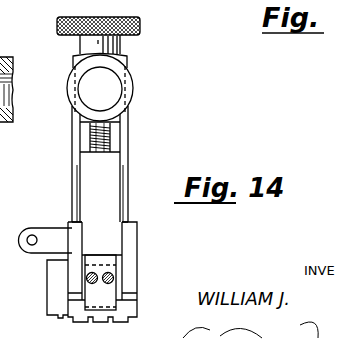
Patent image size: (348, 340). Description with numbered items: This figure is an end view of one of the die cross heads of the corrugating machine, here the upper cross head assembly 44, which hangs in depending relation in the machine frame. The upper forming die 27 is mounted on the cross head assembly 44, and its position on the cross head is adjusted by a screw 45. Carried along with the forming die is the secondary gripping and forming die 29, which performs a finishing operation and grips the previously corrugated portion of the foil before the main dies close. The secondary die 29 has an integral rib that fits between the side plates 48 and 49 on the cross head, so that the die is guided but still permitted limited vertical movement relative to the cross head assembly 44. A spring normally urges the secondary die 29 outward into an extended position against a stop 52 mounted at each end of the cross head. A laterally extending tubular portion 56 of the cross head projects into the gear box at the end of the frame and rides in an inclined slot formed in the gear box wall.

The screw 45 is at (142, 23).
The tubular portion 56 is at (135, 82).
The upper cross head assembly 44 is at (130, 142).
The side plate 48 is at (72, 223).
The side plate 49 is at (130, 238).
The stop 52 is at (111, 289).
The secondary gripping and forming die 29 is at (133, 299).
The upper forming die 27 is at (47, 288).